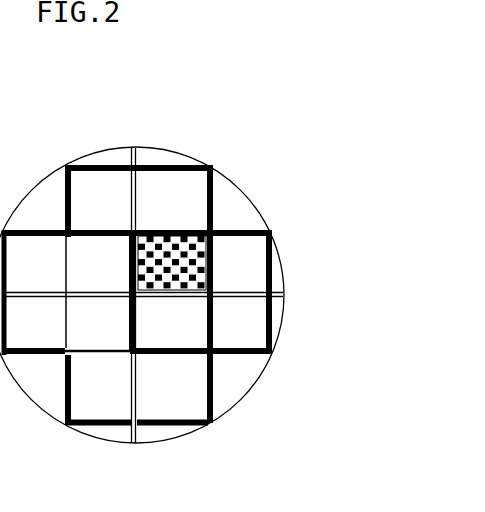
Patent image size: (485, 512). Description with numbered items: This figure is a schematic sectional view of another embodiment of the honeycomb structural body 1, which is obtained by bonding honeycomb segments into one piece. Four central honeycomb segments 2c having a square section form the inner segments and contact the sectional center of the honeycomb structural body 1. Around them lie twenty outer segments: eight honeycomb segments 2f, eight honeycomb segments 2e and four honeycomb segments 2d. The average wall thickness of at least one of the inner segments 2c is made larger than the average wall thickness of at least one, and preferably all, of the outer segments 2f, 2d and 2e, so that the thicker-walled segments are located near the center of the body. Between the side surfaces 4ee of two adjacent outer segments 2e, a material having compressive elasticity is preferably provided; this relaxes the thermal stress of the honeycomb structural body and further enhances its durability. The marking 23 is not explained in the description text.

The honeycomb structural body 1 is at (160, 133).
The honeycomb segment 2d is at (230, 185).
The honeycomb segment 2e is at (275, 285).
The honeycomb segment 2f is at (250, 332).
The honeycomb segment 2c is at (175, 330).
The edge region 23 is at (248, 393).
The side surfaces 4ee is at (130, 438).